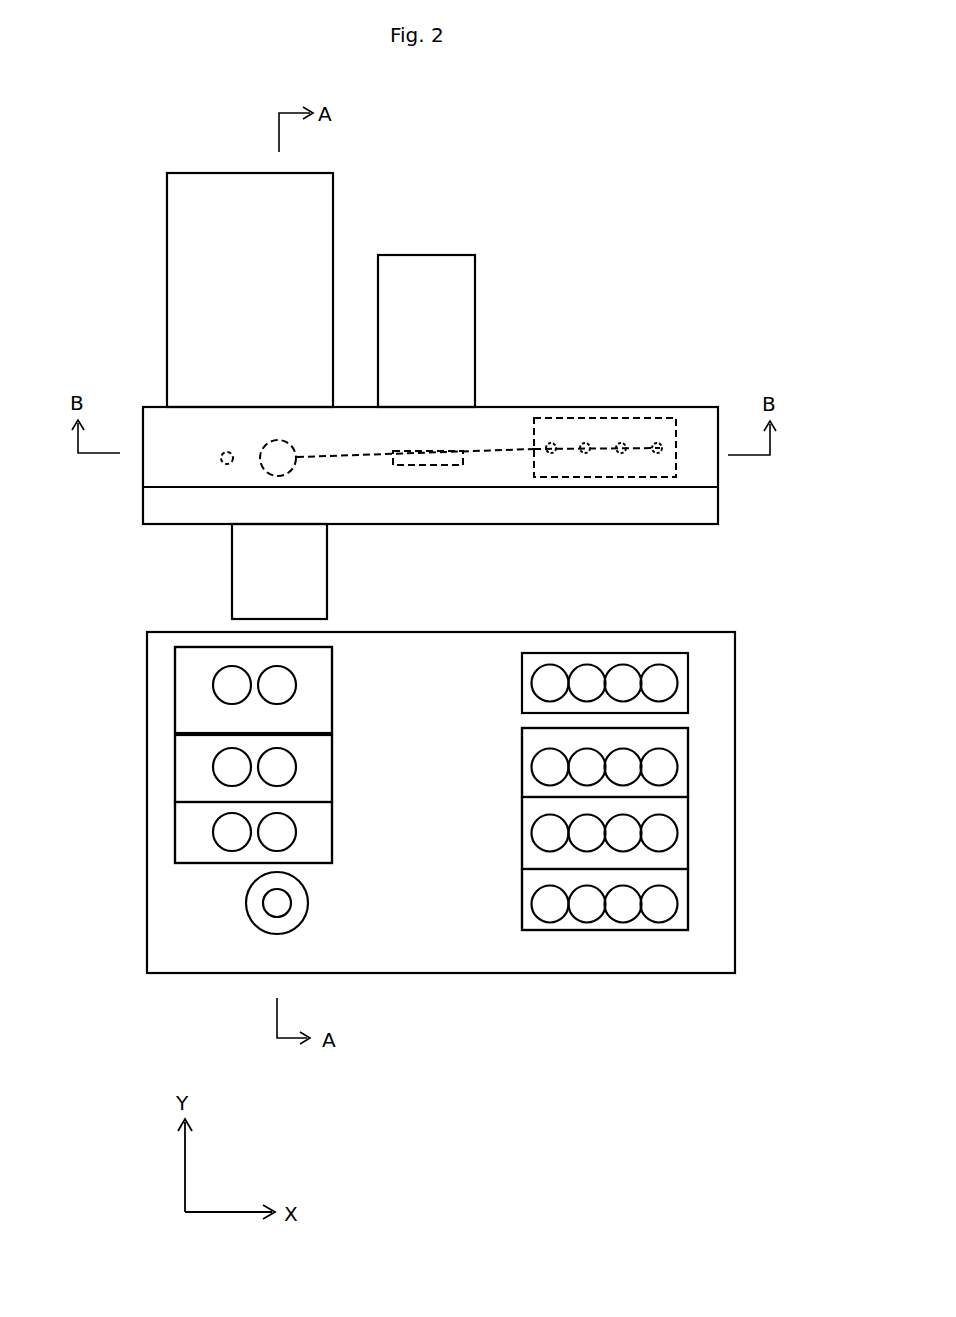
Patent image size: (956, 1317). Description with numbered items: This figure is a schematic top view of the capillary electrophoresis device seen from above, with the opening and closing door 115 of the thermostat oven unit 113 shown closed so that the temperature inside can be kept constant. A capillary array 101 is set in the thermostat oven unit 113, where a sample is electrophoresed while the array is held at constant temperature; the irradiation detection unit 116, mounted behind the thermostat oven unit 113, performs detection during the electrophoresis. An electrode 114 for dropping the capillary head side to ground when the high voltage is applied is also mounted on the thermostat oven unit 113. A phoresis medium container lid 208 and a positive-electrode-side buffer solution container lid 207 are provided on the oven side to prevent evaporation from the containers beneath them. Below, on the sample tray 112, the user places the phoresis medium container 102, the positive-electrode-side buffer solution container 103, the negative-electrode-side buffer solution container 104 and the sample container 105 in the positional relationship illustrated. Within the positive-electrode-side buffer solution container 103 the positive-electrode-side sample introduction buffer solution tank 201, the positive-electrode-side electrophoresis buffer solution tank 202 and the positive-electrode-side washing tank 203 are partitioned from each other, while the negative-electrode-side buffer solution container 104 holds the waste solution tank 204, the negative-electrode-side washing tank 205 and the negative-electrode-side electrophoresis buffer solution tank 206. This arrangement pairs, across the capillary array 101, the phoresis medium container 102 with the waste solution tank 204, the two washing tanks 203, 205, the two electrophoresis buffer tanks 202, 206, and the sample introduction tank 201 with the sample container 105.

The capillary array 101 is at (497, 440).
The phoresis medium container 102 is at (257, 924).
The positive-electrode-side buffer solution container 103 is at (350, 790).
The negative-electrode-side buffer solution container 104 is at (505, 790).
The sample container 105 is at (670, 688).
The sample tray 112 is at (497, 965).
The thermostat oven unit 113 is at (645, 406).
The electrode 114 is at (221, 456).
The opening and closing door 115 is at (613, 513).
The irradiation detection unit 116 is at (440, 254).
The positive-electrode-side sample introduction buffer solution tank 201 is at (195, 690).
The positive-electrode-side electrophoresis buffer solution tank 202 is at (195, 773).
The positive-electrode-side washing tank 203 is at (192, 842).
The waste solution tank 204 is at (670, 908).
The negative-electrode-side washing tank 205 is at (670, 842).
The negative-electrode-side electrophoresis buffer solution tank 206 is at (670, 775).
The positive-electrode-side buffer solution container lid 207 is at (175, 216).
The phoresis medium container lid 208 is at (236, 571).